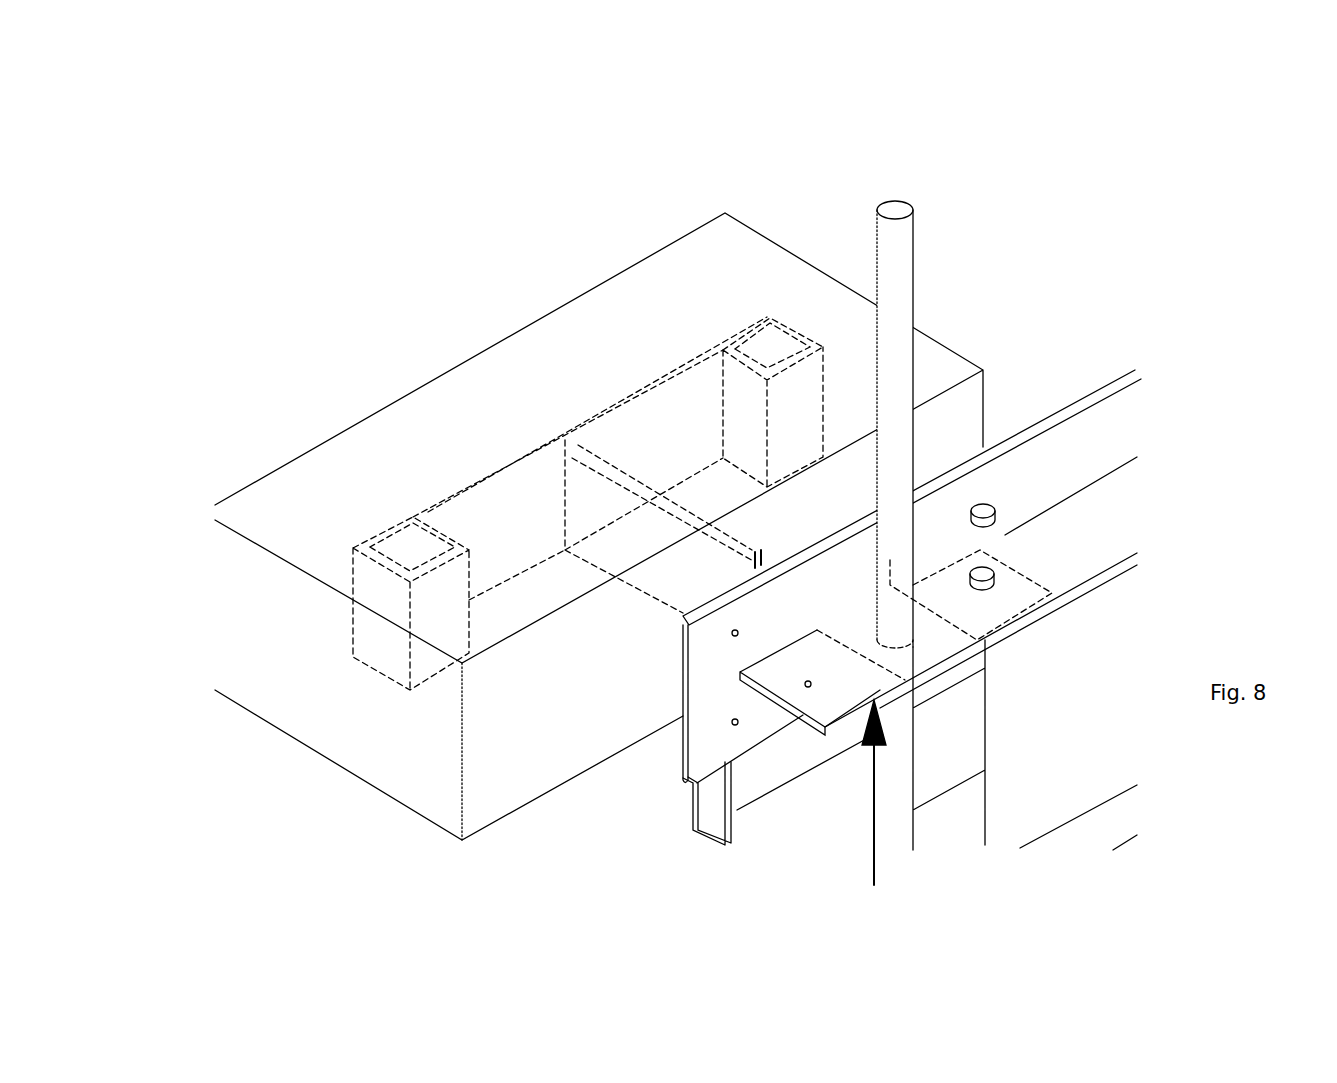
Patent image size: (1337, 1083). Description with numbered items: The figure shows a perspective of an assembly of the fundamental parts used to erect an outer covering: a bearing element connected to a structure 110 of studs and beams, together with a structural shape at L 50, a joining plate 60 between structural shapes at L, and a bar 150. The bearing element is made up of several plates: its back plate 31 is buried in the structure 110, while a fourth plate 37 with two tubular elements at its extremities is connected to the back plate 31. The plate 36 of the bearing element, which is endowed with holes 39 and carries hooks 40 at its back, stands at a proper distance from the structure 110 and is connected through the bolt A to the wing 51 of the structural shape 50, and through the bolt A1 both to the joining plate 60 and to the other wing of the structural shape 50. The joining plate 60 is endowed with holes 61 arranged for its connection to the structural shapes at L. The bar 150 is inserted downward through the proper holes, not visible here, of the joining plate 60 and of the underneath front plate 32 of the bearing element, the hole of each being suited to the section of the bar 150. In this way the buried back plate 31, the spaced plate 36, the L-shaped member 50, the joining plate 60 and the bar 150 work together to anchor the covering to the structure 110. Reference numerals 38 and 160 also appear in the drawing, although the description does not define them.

The structure 110 is at (650, 288).
The fourth plate 37 is at (427, 510).
The recesses 38 is at (417, 543).
The back plate 31 is at (610, 473).
The structural shape at L 50 is at (1033, 415).
The plate 36 is at (957, 503).
The plate 160 is at (803, 662).
The wing 51 is at (1100, 427).
The second front plate 32 is at (987, 643).
The bar 150 is at (890, 258).
The bolt A is at (990, 520).
The bolt A1 is at (985, 585).
The holes 39 is at (732, 722).
The holes 61 is at (806, 687).
The hooks 40 is at (700, 812).
The joining plate 60 is at (875, 804).